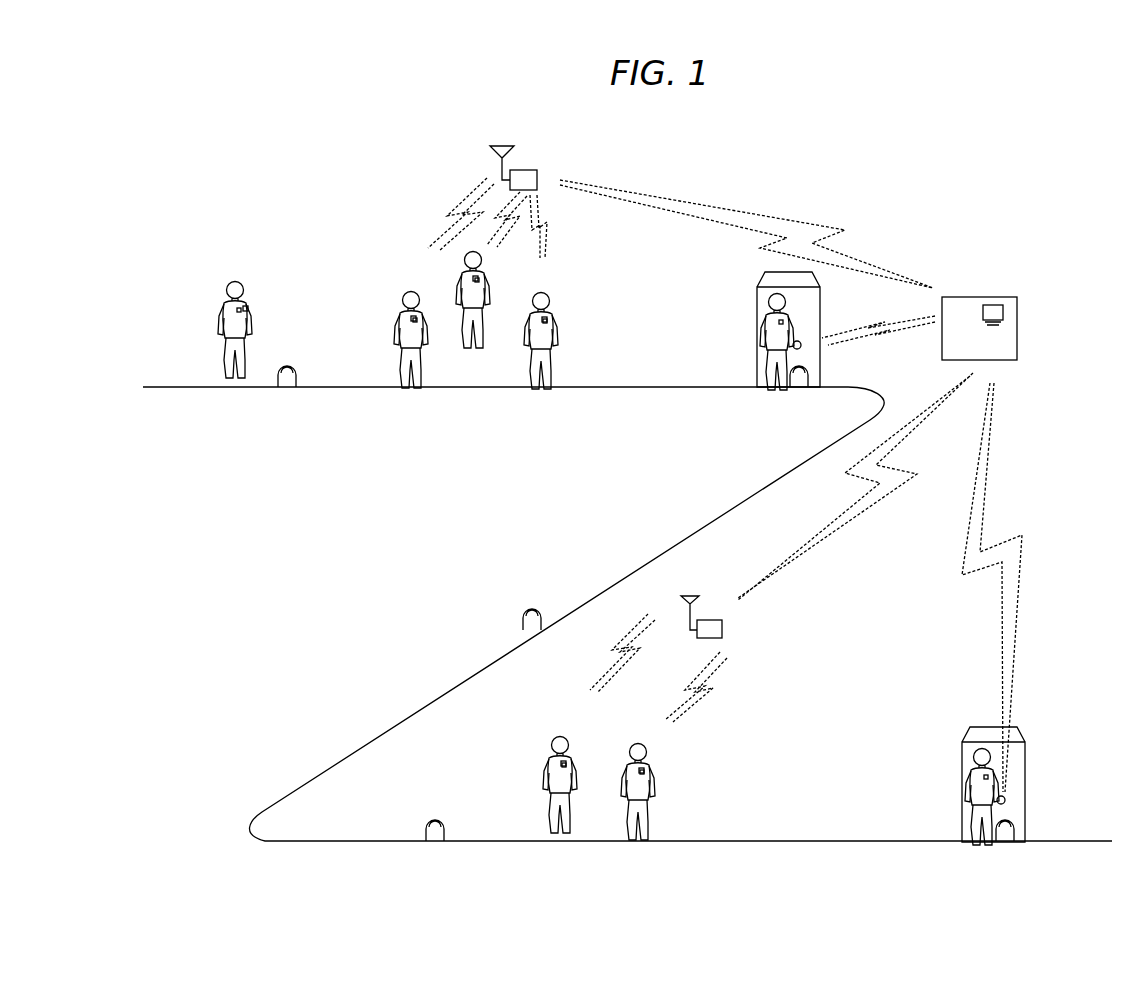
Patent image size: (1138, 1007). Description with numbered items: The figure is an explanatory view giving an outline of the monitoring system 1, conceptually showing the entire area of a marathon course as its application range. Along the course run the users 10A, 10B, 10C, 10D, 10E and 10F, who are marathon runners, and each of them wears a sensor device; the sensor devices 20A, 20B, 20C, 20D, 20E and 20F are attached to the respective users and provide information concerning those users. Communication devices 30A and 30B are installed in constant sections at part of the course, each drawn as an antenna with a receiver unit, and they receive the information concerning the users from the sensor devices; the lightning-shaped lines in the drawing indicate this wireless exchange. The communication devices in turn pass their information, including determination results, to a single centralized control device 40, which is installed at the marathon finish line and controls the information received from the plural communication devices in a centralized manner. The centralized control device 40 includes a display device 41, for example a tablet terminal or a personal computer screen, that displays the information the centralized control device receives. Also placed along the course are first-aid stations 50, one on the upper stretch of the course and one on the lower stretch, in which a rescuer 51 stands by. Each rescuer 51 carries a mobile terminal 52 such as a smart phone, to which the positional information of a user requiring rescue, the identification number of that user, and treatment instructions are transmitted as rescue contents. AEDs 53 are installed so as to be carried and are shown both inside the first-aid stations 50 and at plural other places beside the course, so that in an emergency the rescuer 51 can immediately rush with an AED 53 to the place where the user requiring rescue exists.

The monitoring system 1 is at (949, 177).
The user 10A is at (222, 333).
The user 10B is at (398, 320).
The user 10C is at (468, 325).
The user 10D is at (558, 323).
The user 10E is at (551, 807).
The user 10F is at (649, 812).
The sensor device 20A is at (247, 306).
The sensor device 20B is at (418, 316).
The sensor device 20C is at (479, 279).
The sensor device 20D is at (549, 318).
The sensor device 20E is at (567, 762).
The sensor device 20F is at (650, 768).
The communication device 30A is at (537, 175).
The communication device 30B is at (722, 628).
The centralized control device 40 is at (1017, 335).
The display device 41 is at (1003, 312).
The first-aid station 50 is at (765, 272).
The rescuer 51 is at (757, 326).
The mobile terminal 52 is at (801, 343).
The AED 53 is at (287, 366).